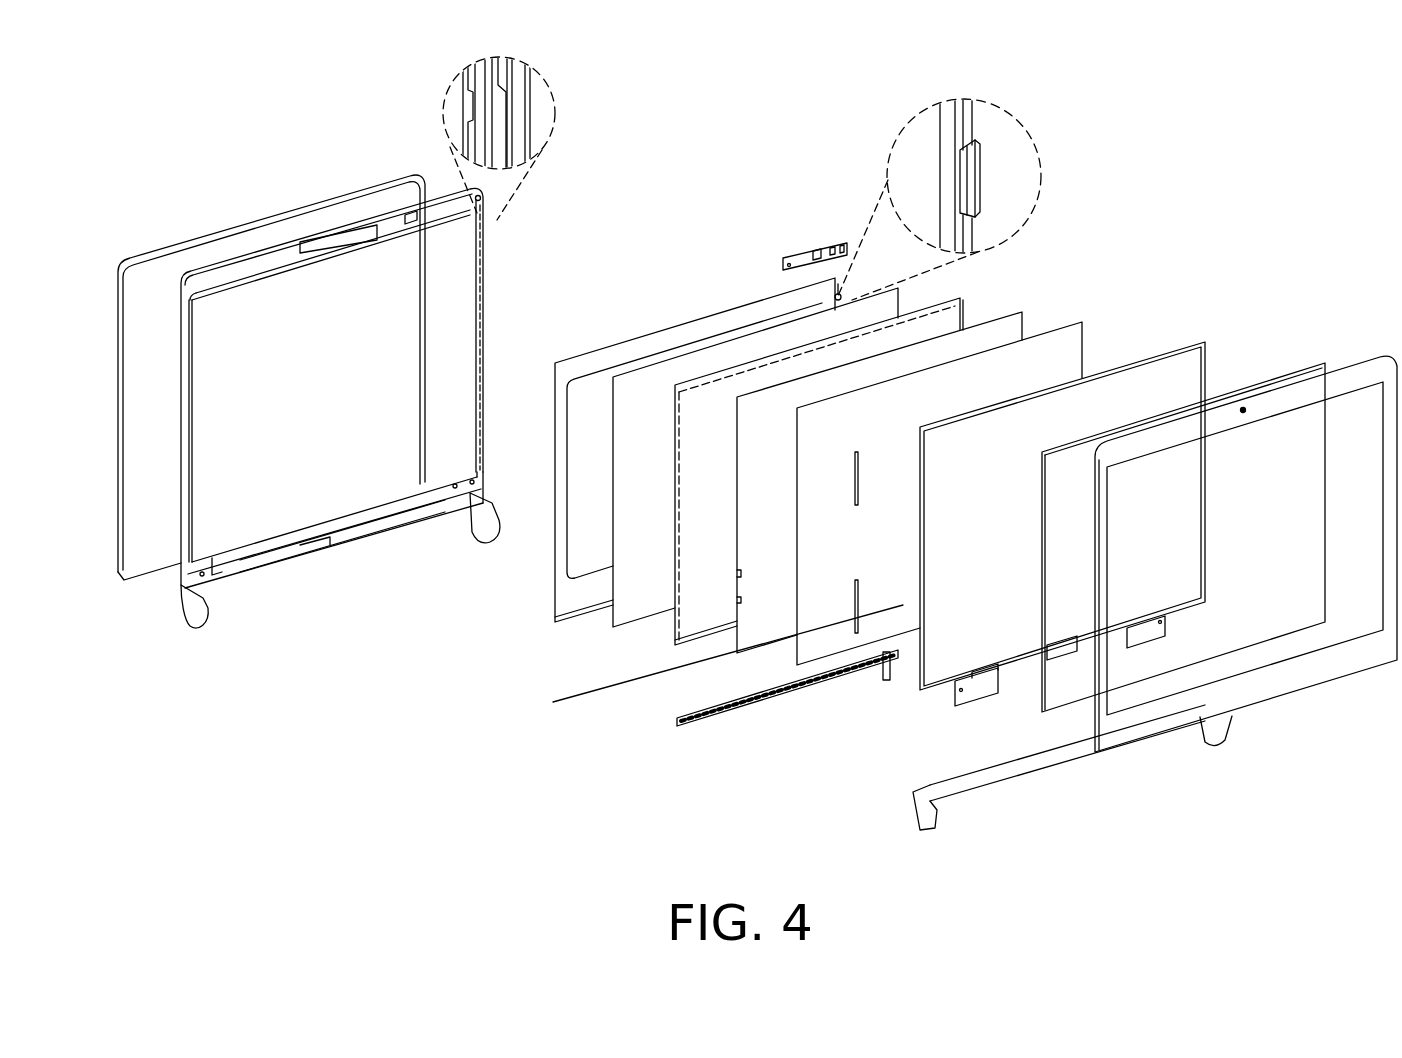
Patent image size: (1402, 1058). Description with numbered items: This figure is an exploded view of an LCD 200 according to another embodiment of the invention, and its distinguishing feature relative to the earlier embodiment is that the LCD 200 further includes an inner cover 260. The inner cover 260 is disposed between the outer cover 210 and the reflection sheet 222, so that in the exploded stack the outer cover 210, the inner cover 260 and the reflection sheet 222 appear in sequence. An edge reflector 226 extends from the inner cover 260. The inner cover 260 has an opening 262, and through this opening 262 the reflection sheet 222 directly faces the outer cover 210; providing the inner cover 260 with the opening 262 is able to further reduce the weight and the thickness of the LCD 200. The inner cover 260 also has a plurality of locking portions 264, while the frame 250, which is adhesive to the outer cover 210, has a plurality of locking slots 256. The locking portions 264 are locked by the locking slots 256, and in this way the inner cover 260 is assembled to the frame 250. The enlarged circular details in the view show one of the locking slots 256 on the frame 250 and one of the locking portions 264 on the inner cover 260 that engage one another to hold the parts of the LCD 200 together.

The LCD 200 is at (1165, 218).
The outer cover 210 is at (148, 562).
The reflection sheet 222 is at (636, 385).
The edge reflector 226 is at (577, 620).
The frame 250 is at (183, 612).
The locking slots 256 is at (462, 110).
The inner cover 260 is at (748, 318).
The opening 262 is at (585, 395).
The locking portions 264 is at (970, 176).